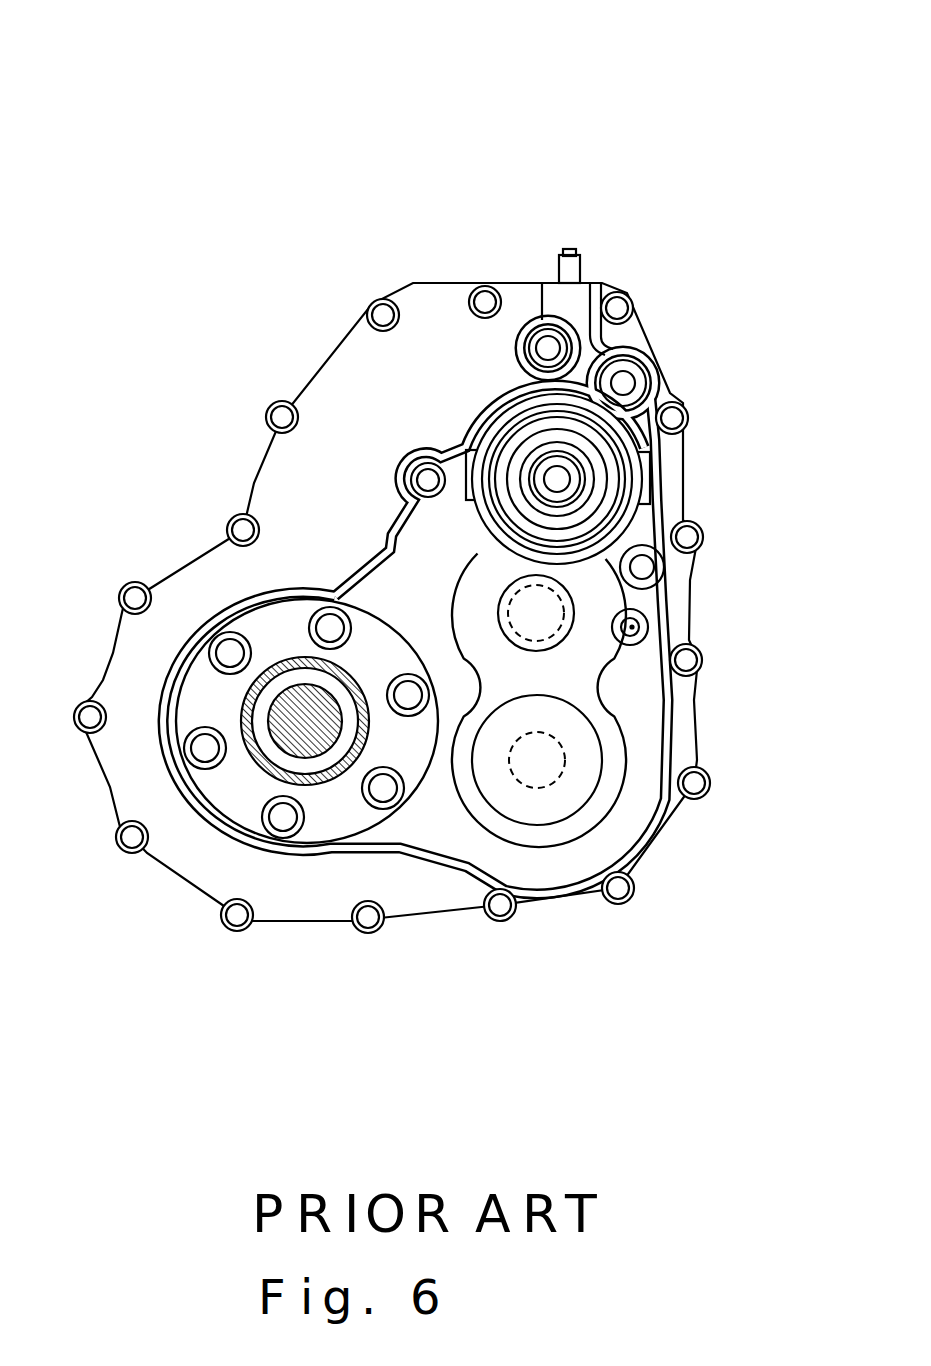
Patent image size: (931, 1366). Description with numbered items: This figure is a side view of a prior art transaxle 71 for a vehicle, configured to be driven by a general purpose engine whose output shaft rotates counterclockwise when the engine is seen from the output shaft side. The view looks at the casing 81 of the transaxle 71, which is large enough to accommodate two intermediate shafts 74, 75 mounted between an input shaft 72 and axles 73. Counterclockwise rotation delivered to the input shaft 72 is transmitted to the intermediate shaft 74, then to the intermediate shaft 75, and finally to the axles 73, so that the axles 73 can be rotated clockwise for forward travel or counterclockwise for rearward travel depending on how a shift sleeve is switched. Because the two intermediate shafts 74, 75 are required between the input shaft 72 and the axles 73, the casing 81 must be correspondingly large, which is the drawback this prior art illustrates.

The transaxle 71 is at (332, 148).
The casing 81 is at (184, 565).
The input shaft 72 is at (560, 479).
The axles 73 is at (290, 735).
The intermediate shaft 74 is at (555, 612).
The intermediate shaft 75 is at (553, 765).